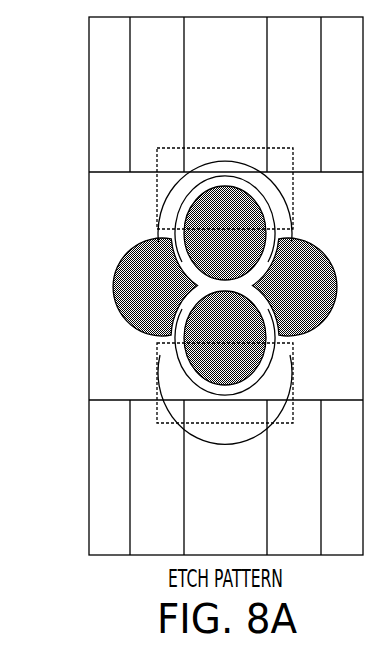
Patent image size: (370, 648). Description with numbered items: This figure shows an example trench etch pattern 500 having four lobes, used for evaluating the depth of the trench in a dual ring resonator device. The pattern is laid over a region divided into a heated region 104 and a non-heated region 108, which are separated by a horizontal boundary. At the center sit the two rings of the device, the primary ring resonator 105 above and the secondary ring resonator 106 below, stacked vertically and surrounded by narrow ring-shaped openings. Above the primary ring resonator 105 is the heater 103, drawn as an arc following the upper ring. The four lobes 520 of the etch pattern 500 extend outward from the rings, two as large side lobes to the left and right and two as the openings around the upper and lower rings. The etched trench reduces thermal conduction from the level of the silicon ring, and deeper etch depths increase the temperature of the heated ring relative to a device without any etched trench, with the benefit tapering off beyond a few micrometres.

The etch pattern structure 500 is at (66, 92).
The heated region 104 is at (97, 200).
The non-heated region 108 is at (97, 377).
The side lobe etch regions 520 is at (141, 262).
The primary ring resonator 105 is at (285, 237).
The heater 103 is at (220, 163).
The secondary ring resonator 106 is at (281, 351).